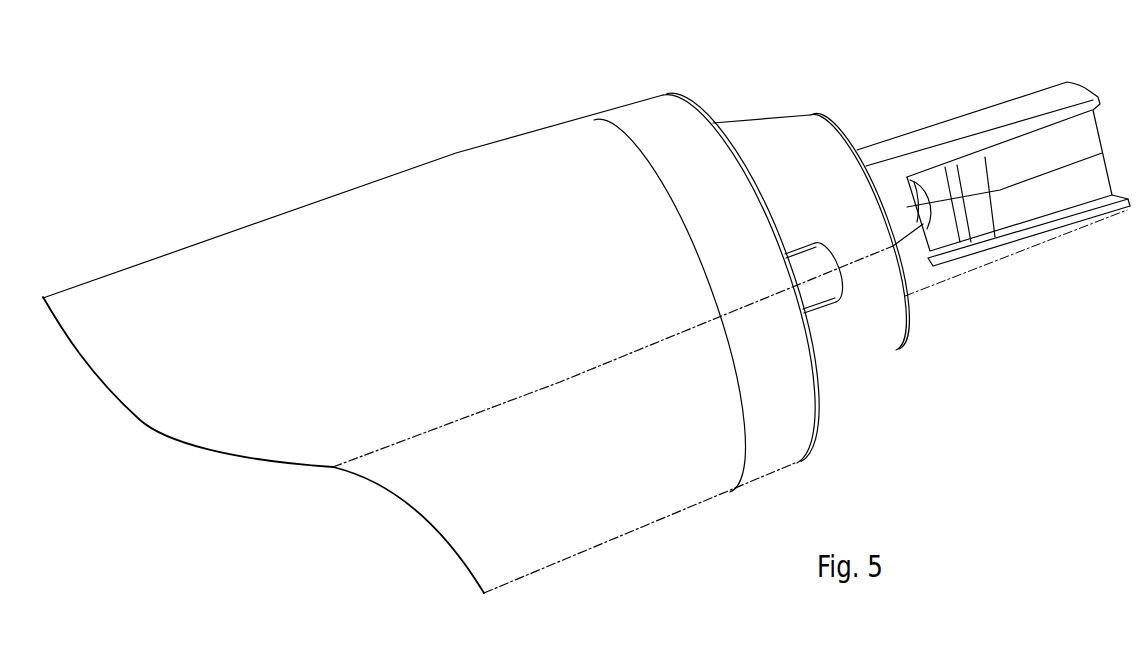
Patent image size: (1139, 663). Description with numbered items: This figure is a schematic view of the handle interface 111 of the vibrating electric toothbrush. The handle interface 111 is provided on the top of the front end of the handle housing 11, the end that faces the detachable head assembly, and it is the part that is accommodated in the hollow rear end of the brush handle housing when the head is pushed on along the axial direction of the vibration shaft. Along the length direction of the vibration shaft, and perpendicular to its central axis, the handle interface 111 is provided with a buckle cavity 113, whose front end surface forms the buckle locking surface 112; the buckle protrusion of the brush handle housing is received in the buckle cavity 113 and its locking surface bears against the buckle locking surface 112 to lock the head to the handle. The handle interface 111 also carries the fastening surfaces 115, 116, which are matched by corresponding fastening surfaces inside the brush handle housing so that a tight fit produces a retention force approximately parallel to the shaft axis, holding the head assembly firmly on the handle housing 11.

The handle housing 11 is at (618, 492).
The handle interface 111 is at (750, 102).
The buckle locking surface of handle interface 112 is at (972, 233).
The buckle cavity of handle interface 113 is at (940, 233).
The fastening surface of handle interface 115 is at (807, 148).
The fastening surface of handle interface 116 is at (965, 123).